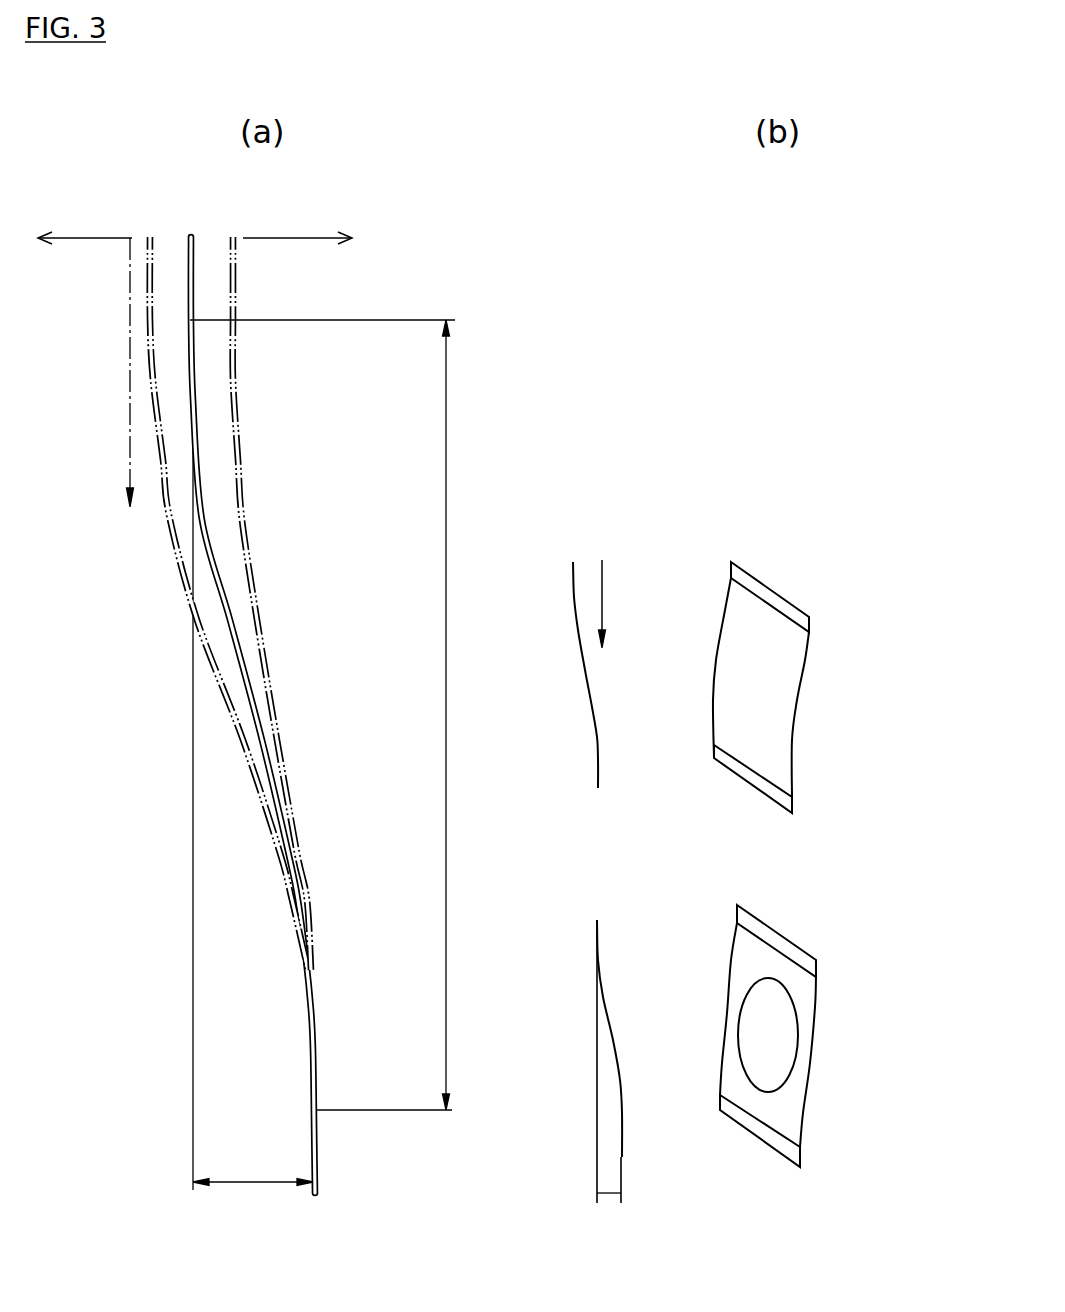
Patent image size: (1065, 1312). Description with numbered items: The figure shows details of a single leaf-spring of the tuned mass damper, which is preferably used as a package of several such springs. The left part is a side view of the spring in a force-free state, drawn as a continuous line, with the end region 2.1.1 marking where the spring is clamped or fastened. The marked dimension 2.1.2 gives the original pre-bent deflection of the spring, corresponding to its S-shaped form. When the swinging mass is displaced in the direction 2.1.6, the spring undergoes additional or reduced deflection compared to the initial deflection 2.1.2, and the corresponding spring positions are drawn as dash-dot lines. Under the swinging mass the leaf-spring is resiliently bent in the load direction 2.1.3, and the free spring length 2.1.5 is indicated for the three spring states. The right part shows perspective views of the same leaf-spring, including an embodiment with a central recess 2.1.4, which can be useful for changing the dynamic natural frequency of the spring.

The end region 2.1.1 is at (187, 237).
The pre-bent deflection 2.1.2 is at (642, 1165).
The load direction 2.1.3 is at (362, 443).
The central recess 2.1.4 is at (793, 1005).
The free spring length 2.1.5 is at (892, 688).
The direction of additional or reduced deflection 2.1.6 is at (195, 226).